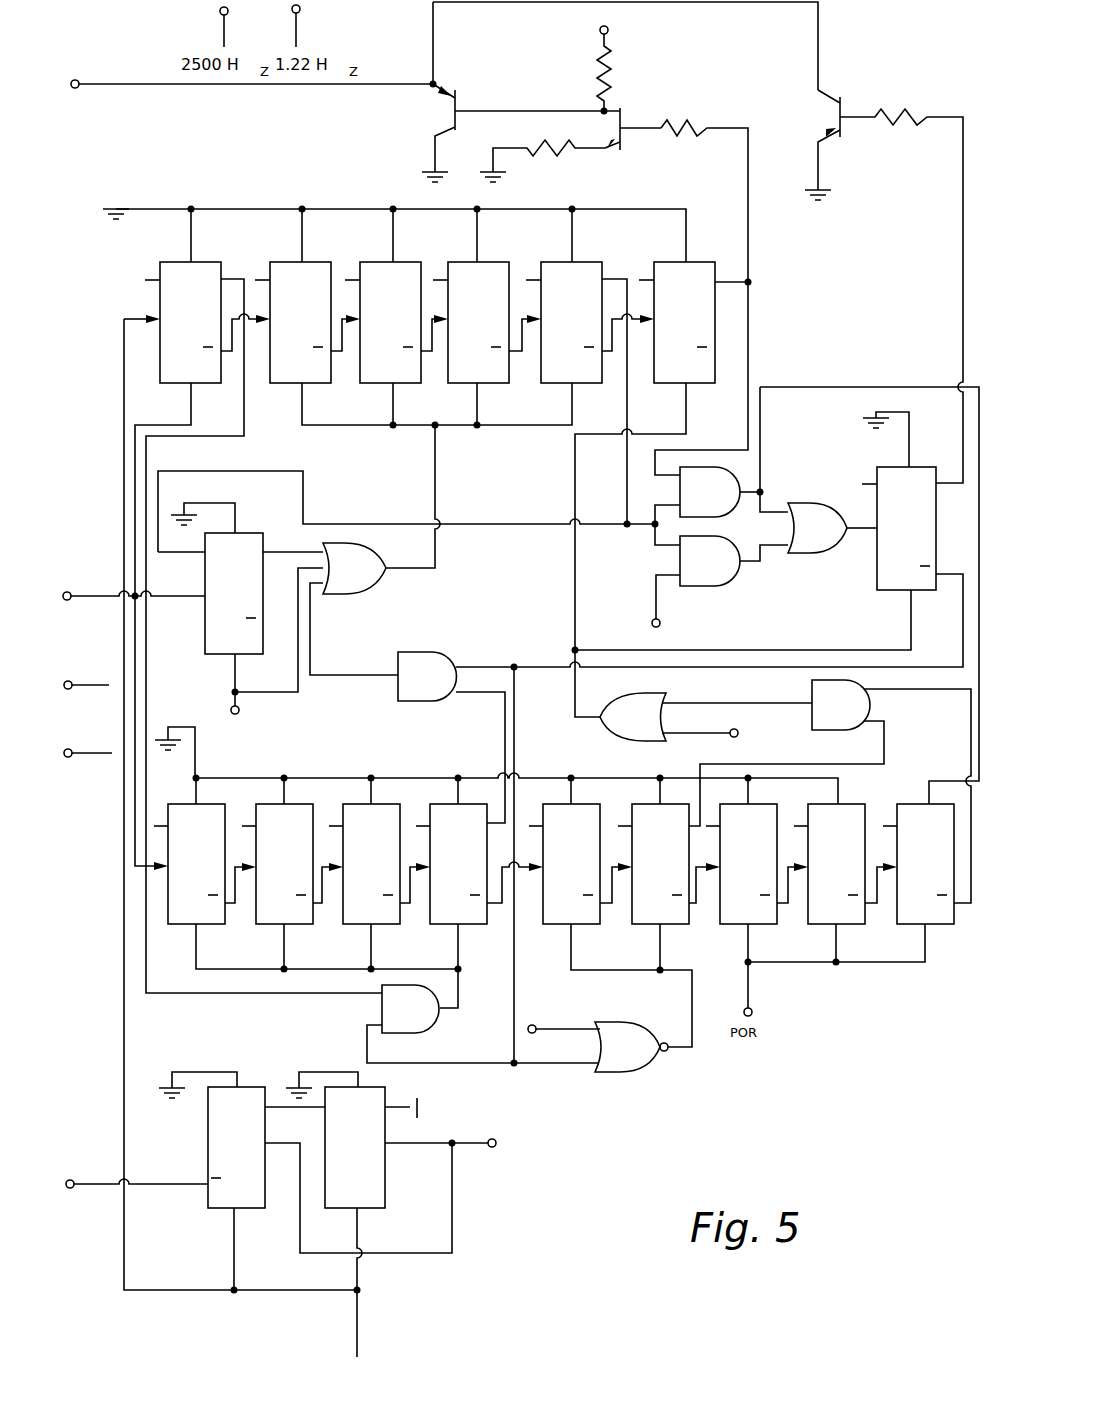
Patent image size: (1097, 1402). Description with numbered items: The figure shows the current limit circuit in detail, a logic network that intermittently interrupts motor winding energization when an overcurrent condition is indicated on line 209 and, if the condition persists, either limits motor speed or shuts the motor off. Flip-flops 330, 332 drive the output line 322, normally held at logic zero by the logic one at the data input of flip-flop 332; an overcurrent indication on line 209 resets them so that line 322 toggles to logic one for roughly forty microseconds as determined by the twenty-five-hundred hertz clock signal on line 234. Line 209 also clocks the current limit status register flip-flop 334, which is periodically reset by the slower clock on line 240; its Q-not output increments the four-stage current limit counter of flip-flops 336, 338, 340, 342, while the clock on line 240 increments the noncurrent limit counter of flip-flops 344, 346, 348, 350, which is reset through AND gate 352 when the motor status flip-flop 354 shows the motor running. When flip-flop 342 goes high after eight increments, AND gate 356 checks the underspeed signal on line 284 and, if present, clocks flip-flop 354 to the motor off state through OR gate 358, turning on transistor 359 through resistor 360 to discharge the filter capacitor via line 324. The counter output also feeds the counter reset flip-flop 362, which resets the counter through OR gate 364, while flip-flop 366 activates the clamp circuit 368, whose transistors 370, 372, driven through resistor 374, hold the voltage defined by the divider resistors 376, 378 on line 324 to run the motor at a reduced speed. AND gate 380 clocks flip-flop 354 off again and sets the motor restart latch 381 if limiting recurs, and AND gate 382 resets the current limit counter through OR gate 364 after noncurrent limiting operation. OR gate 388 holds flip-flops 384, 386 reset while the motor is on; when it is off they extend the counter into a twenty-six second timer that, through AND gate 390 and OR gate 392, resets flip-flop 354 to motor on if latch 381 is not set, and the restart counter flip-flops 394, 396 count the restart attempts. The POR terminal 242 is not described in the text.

The line 209 is at (123, 997).
The 2500 Hz clock signal line 234 is at (222, 31).
The 1.22 Hz clock signal line 240 is at (299, 28).
The POR terminal 242 is at (102, 757).
The underspeed signal line 284 is at (84, 688).
The output line 322 is at (95, 1181).
The line 324 is at (165, 87).
The flip-flop 330 is at (218, 1208).
The flip-flop 332 is at (378, 1188).
The current limit status register flip-flop 334 is at (198, 262).
The flip-flop 336 is at (315, 262).
The flip-flop 338 is at (410, 262).
The flip-flop 340 is at (494, 262).
The flip-flop 342 is at (590, 265).
The flip-flop 344 is at (213, 924).
The flip-flop 346 is at (300, 924).
The flip-flop 348 is at (388, 924).
The flip-flop 350 is at (480, 924).
The AND gate 352 is at (418, 1023).
The motor status flip-flop 354 is at (878, 581).
The AND gate 356 is at (714, 579).
The OR gate 358 is at (813, 544).
The transistor 359 is at (846, 134).
The resistor 360 is at (893, 108).
The counter reset flip-flop 362 is at (207, 625).
The OR gate 364 is at (352, 586).
The flip-flop 366 is at (702, 265).
The clamp circuit 368 is at (678, 66).
The transistor 370 is at (625, 143).
The transistor 372 is at (458, 107).
The resistor 374 is at (665, 127).
The resistor 376 is at (605, 60).
The resistor 378 is at (537, 155).
The AND gate 380 is at (734, 477).
The motor restart latch 381 is at (943, 924).
The AND gate 382 is at (437, 657).
The flip-flop 384 is at (585, 924).
The flip-flop 386 is at (673, 924).
The OR gate 388 is at (641, 1056).
The AND gate 390 is at (861, 706).
The OR gate 392 is at (622, 736).
The flip-flop 394 is at (763, 924).
The flip-flop 396 is at (853, 924).